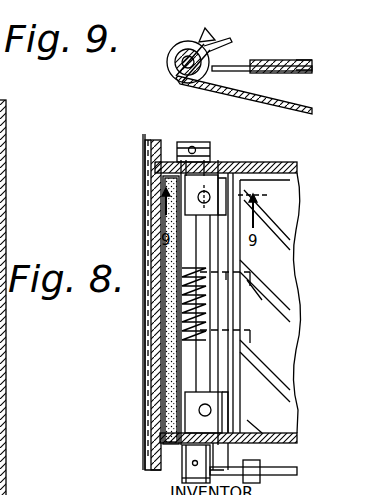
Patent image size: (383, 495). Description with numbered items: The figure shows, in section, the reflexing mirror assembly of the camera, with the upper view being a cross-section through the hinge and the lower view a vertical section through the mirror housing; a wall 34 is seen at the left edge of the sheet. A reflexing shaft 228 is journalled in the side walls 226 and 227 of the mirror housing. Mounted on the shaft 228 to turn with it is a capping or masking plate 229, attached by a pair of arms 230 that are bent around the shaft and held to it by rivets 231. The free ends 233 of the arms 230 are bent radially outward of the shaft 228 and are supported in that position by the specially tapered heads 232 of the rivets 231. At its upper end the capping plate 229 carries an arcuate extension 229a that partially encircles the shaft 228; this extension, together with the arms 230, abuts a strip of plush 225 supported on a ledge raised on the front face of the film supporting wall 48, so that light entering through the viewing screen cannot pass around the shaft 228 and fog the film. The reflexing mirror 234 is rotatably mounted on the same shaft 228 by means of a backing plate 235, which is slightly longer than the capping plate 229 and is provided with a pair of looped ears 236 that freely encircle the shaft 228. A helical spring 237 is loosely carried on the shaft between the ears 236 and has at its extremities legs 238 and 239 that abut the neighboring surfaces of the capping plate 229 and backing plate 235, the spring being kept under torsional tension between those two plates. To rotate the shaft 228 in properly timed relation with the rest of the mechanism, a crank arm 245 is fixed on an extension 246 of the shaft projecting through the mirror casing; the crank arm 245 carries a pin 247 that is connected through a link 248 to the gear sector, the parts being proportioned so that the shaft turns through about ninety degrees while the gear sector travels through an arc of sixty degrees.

In FIG. 8, the wall 34 is at (6, 342).
In FIG. 8, the film supporting wall 48 is at (145, 140).
In FIG. 8, the strip of plush 225 is at (150, 412).
In FIG. 8, the side wall 226 is at (278, 162).
In FIG. 8, the side wall 227 is at (278, 443).
In FIG. 9, the reflexing shaft 228 is at (171, 70).
In FIG. 8, the reflexing shaft 228 is at (180, 142).
In FIG. 9, the capping plate 229 is at (285, 108).
In FIG. 8, the capping plate 229 is at (233, 162).
In FIG. 8, the arcuate extension 229a is at (181, 318).
In FIG. 9, the arms 230 is at (178, 80).
In FIG. 8, the arms 230 is at (165, 192).
In FIG. 9, the rivets 231 is at (187, 44).
In FIG. 9, the tapered heads 232 is at (212, 42).
In FIG. 8, the tapered heads 232 is at (208, 192).
In FIG. 9, the free ends 233 is at (232, 41).
In FIG. 8, the free ends 233 is at (226, 210).
In FIG. 9, the reflexing mirror 234 is at (304, 62).
In FIG. 8, the reflexing mirror 234 is at (298, 278).
In FIG. 9, the backing plate 235 is at (282, 80).
In FIG. 8, the looped ears 236 is at (164, 380).
In FIG. 8, the helical spring 237 is at (182, 300).
In FIG. 8, the leg 238 is at (240, 296).
In FIG. 8, the leg 239 is at (246, 345).
In FIG. 8, the crank arm 245 is at (150, 453).
In FIG. 8, the extension 246 is at (180, 472).
In FIG. 8, the pin 247 is at (246, 478).
In FIG. 8, the link 248 is at (290, 477).